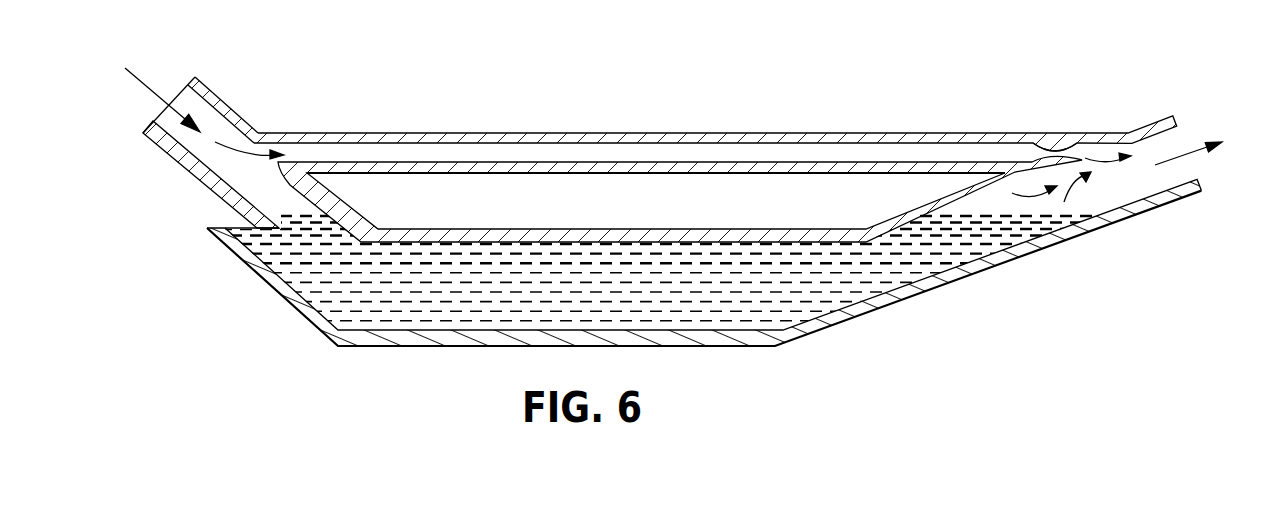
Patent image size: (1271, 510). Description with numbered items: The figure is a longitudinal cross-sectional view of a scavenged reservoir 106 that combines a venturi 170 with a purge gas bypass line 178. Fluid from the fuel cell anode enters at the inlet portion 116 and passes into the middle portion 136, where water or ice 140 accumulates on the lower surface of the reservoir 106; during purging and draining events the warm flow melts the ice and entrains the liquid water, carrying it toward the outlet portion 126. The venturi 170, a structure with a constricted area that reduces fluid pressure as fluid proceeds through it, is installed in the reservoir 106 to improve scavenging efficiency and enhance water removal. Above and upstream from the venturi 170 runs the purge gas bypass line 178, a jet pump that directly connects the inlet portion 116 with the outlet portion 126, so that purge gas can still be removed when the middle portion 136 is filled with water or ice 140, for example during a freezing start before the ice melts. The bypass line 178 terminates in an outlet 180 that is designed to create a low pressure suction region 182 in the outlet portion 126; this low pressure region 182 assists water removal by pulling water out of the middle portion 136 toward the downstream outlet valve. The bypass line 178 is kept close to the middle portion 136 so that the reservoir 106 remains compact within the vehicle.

The scavenged reservoir 106 is at (781, 69).
The inlet portion 116 is at (203, 163).
The outlet portion 126 is at (918, 272).
The middle portion 136 is at (490, 302).
The water or ice 140 is at (688, 302).
The venturi 170 is at (279, 215).
The purge gas bypass line 178 is at (667, 133).
The outlet 180 is at (1092, 143).
The low pressure suction region 182 is at (1098, 192).